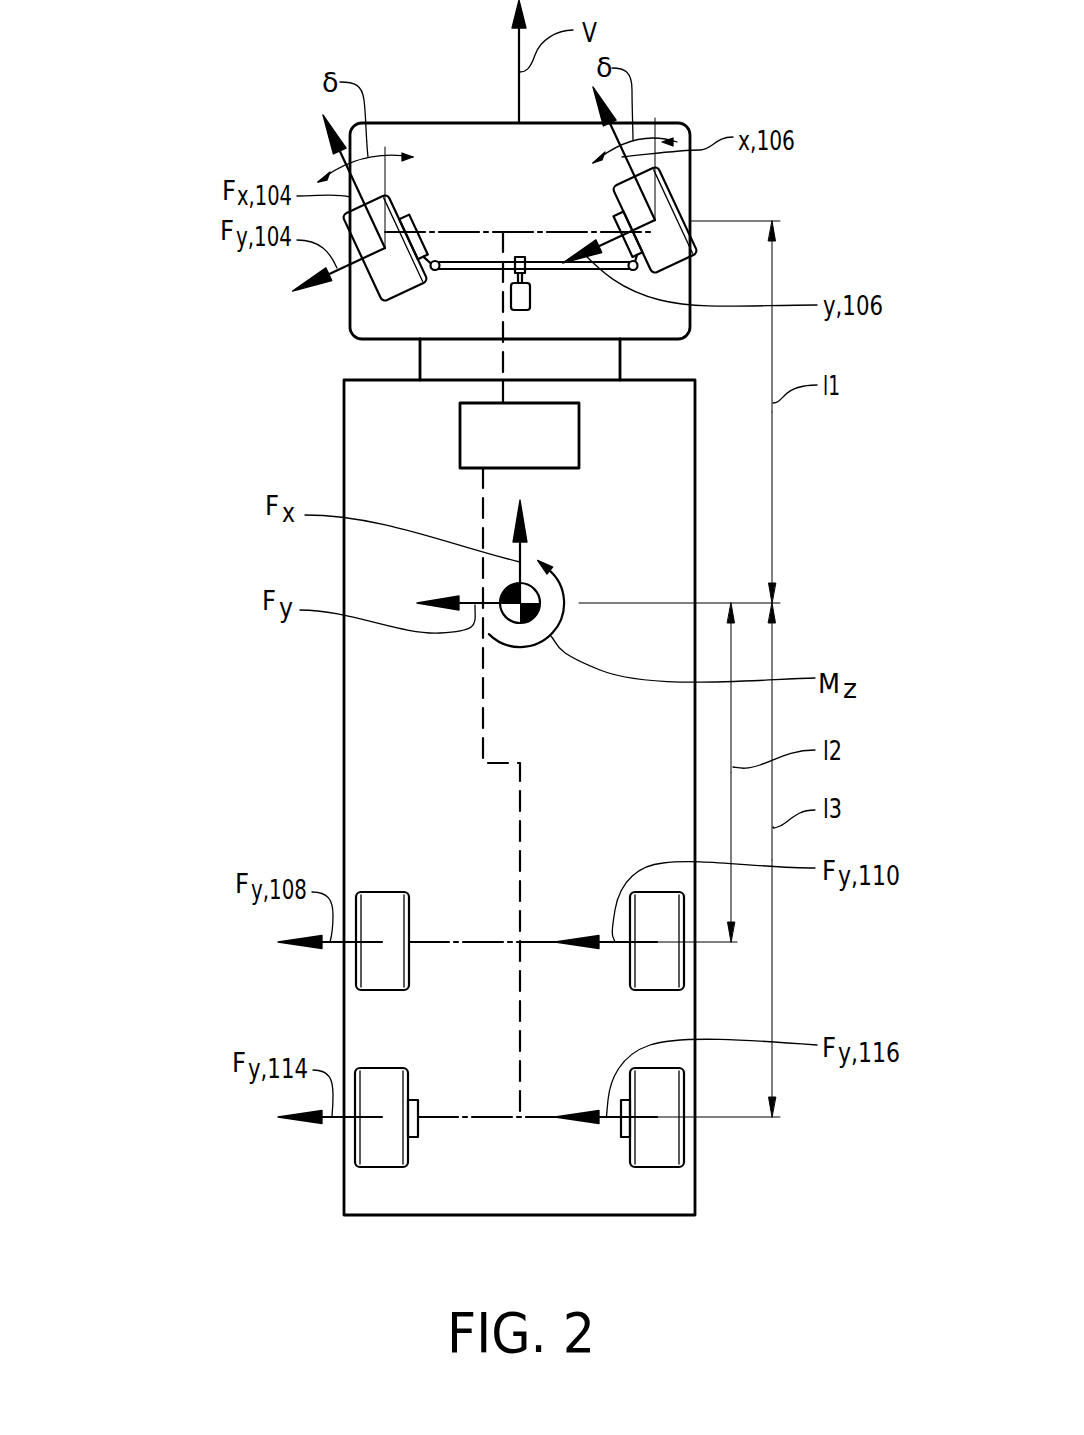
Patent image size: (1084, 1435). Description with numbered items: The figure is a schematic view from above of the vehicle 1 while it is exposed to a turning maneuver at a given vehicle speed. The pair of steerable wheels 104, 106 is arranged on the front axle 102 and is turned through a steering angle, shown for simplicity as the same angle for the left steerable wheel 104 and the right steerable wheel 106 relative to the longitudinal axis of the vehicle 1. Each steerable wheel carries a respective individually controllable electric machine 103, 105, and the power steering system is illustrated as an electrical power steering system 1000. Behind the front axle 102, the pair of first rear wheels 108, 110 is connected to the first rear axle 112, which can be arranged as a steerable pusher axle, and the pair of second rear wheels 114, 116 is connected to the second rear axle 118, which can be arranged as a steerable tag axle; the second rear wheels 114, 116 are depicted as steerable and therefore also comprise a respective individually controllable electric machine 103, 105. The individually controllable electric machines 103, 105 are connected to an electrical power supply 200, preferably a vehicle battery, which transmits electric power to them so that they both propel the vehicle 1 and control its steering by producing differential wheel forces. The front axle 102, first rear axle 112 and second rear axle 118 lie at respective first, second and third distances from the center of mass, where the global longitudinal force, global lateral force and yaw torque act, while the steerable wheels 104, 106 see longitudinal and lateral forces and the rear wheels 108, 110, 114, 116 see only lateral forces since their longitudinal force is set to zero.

The vehicle 1 is at (170, 361).
The front axle 102 is at (480, 230).
The individually controllable electric machine 103 is at (418, 226).
The steerable wheel 104 is at (370, 287).
The individually controllable electric machine 105 is at (612, 245).
The steerable wheel 106 is at (672, 184).
The first rear wheel 108 is at (357, 960).
The first rear wheel 110 is at (684, 960).
The first rear axle 112 is at (463, 942).
The second rear wheel 114 is at (355, 1140).
The second rear wheel 116 is at (684, 1140).
The second rear axle 118 is at (520, 1118).
The electrical power supply 200 is at (460, 437).
The electrical power steering system 1000 is at (530, 297).